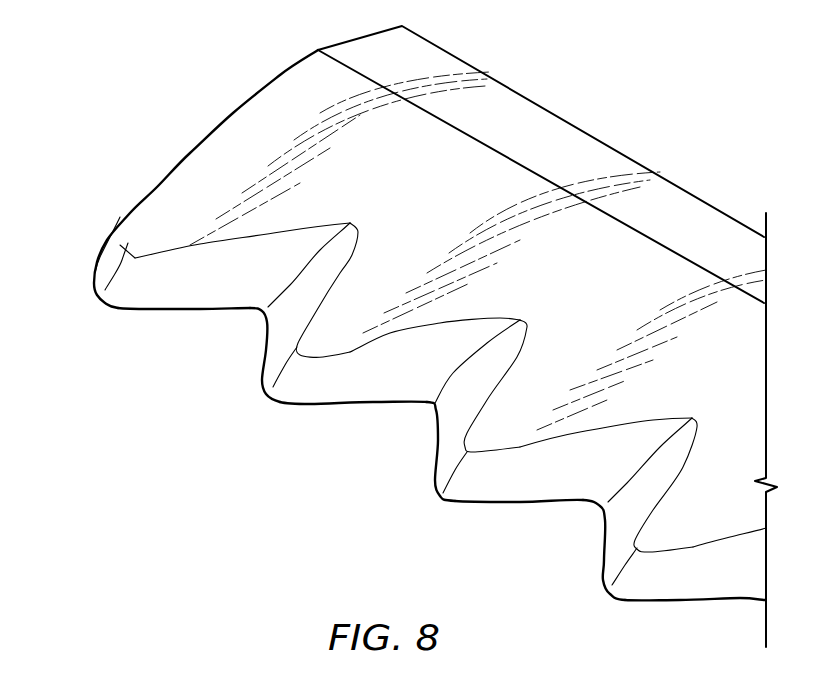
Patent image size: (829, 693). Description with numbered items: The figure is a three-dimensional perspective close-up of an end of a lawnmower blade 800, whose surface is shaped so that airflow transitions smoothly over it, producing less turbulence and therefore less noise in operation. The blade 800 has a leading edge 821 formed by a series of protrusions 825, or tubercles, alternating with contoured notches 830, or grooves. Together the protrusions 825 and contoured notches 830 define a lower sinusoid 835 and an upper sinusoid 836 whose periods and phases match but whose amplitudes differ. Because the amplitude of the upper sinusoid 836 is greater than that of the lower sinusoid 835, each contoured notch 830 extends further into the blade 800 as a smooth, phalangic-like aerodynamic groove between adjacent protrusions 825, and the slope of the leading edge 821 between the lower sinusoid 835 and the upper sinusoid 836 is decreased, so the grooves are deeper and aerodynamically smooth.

The lawnmower blade 800 is at (158, 103).
The leading edge 821 is at (380, 503).
The protrusions 825 is at (100, 293).
The contoured notches 830 is at (232, 340).
The lower sinusoid 835 is at (198, 308).
The upper sinusoid 836 is at (343, 272).